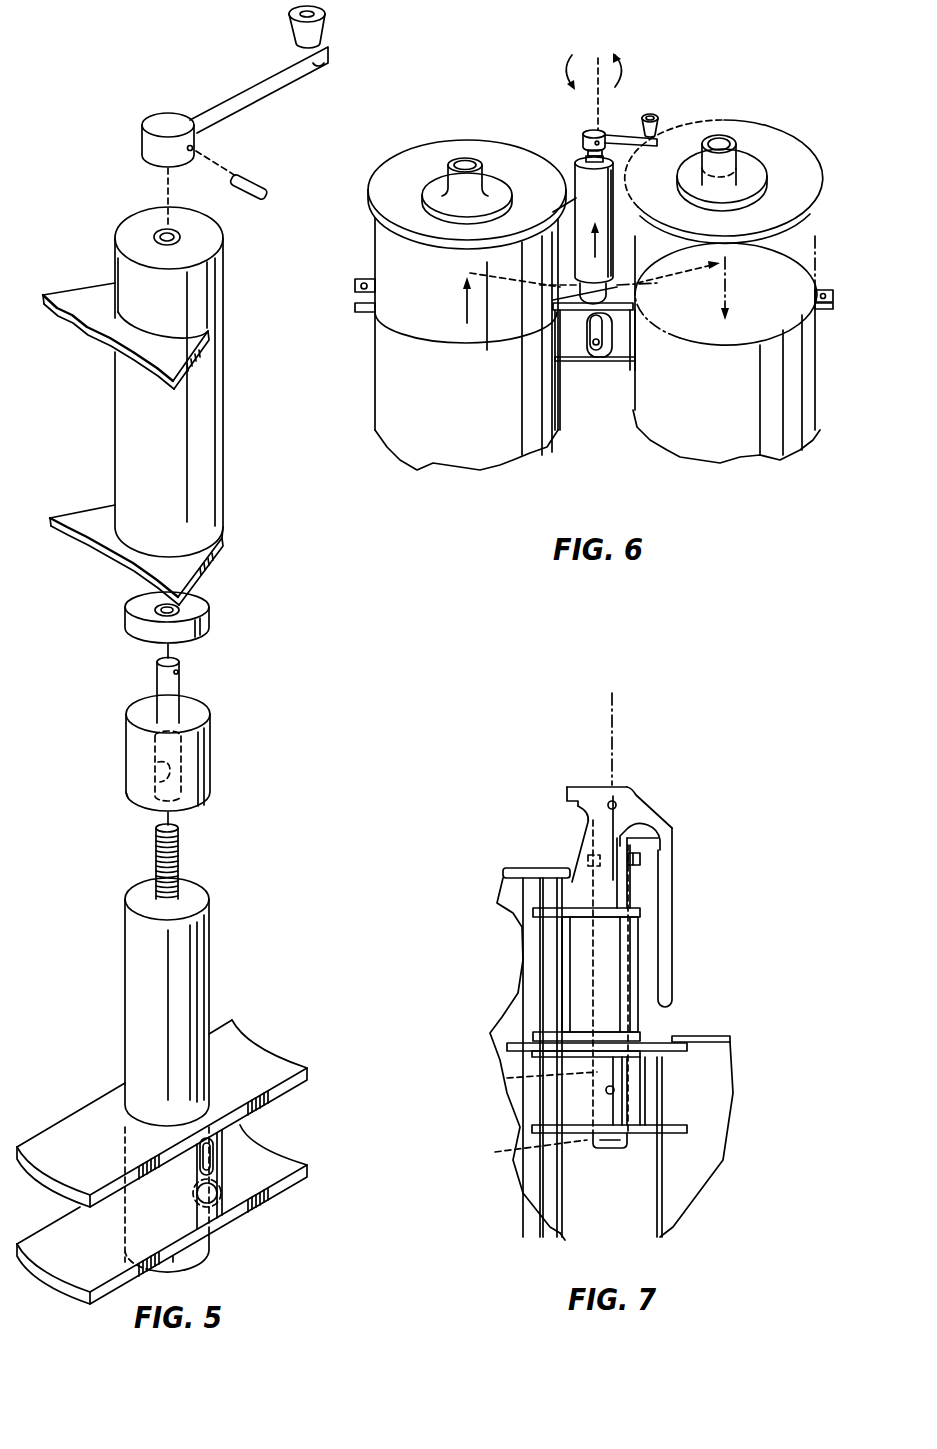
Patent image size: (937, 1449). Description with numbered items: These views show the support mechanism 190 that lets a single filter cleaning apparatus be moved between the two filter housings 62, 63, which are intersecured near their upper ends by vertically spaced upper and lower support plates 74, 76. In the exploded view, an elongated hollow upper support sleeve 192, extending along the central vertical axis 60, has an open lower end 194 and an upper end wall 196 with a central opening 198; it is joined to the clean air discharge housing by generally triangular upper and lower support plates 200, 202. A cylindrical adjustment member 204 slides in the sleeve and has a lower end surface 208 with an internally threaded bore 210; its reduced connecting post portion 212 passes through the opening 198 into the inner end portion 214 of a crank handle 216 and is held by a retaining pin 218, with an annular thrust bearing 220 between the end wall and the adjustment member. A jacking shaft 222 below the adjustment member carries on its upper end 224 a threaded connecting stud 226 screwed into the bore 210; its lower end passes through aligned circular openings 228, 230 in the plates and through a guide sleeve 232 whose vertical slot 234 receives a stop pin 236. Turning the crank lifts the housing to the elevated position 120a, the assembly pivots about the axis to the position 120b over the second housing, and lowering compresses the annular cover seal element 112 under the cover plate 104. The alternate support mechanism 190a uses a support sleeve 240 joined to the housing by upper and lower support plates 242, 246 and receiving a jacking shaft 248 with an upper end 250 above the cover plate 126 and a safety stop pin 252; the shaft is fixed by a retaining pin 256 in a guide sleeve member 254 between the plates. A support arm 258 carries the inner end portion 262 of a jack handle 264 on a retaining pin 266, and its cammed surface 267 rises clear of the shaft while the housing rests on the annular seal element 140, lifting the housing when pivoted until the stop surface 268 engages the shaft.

In FIG. 6, the central vertical axis 60 is at (597, 122).
In FIG. 7, the central vertical axis 60 is at (620, 712).
In FIG. 6, the filter housing 62 is at (374, 374).
In FIG. 7, the filter housing 62 is at (568, 1232).
In FIG. 6, the filter housing 63 is at (631, 412).
In FIG. 7, the filter housing 63 is at (657, 1228).
In FIG. 5, the upper support plate 74 is at (245, 1040).
In FIG. 7, the upper support plate 74 is at (687, 1058).
In FIG. 5, the lower support plate 76 is at (283, 1160).
In FIG. 7, the lower support plate 76 is at (678, 1134).
In FIG. 7, the cover plate 104 is at (723, 1037).
In FIG. 7, the annular cover seal element 112 is at (688, 1051).
In FIG. 6, the elevated position of housing 120a is at (374, 258).
In FIG. 6, the pivoted elevated position of housing 120b is at (760, 120).
In FIG. 7, the cover plate 126 is at (517, 867).
In FIG. 7, the annular seal element 140 is at (507, 1046).
In FIG. 5, the support mechanism 190 is at (122, 812).
In FIG. 7, the alternate support mechanism 190a is at (532, 810).
In FIG. 5, the upper support sleeve 192 is at (222, 460).
In FIG. 6, the upper support sleeve 192 is at (616, 199).
In FIG. 5, the open lower end 194 is at (206, 556).
In FIG. 5, the upper end wall 196 is at (213, 233).
In FIG. 5, the central opening 198 is at (162, 226).
In FIG. 5, the upper support plate 200 is at (88, 295).
In FIG. 5, the lower support plate 202 is at (90, 508).
In FIG. 5, the adjustment member 204 is at (209, 772).
In FIG. 5, the lower end surface 208 is at (200, 800).
In FIG. 5, the internally threaded bore 210 is at (128, 778).
In FIG. 5, the connecting post portion 212 is at (180, 695).
In FIG. 5, the inner end portion 214 is at (163, 113).
In FIG. 5, the crank handle 216 is at (245, 72).
In FIG. 6, the crank handle 216 is at (625, 120).
In FIG. 5, the retaining pin 218 is at (253, 180).
In FIG. 5, the annular thrust bearing 220 is at (209, 620).
In FIG. 5, the jacking shaft 222 is at (209, 988).
In FIG. 5, the upper end 224 is at (200, 890).
In FIG. 5, the connecting stud 226 is at (180, 853).
In FIG. 5, the circular opening 228 is at (132, 1088).
In FIG. 7, the circular opening 228 is at (507, 1078).
In FIG. 7, the circular opening 230 is at (495, 1152).
In FIG. 5, the guide sleeve 232 is at (222, 1176).
In FIG. 5, the vertical slot 234 is at (210, 1156).
In FIG. 5, the stop pin 236 is at (213, 1201).
In FIG. 7, the support sleeve 240 is at (641, 1022).
In FIG. 7, the upper support plate 242 is at (537, 900).
In FIG. 7, the lower support plate 246 is at (535, 1028).
In FIG. 7, the jacking shaft 248 is at (611, 1150).
In FIG. 7, the upper end 250 is at (633, 827).
In FIG. 7, the safety stop pin 252 is at (641, 860).
In FIG. 7, the guide sleeve member 254 is at (647, 1108).
In FIG. 7, the retaining pin 256 is at (604, 1094).
In FIG. 7, the support arm 258 is at (632, 888).
In FIG. 7, the inner end portion 262 is at (600, 787).
In FIG. 7, the jack handle 264 is at (673, 946).
In FIG. 7, the retaining pin 266 is at (617, 800).
In FIG. 7, the cammed surface 267 is at (582, 820).
In FIG. 7, the stop surface 268 is at (562, 792).